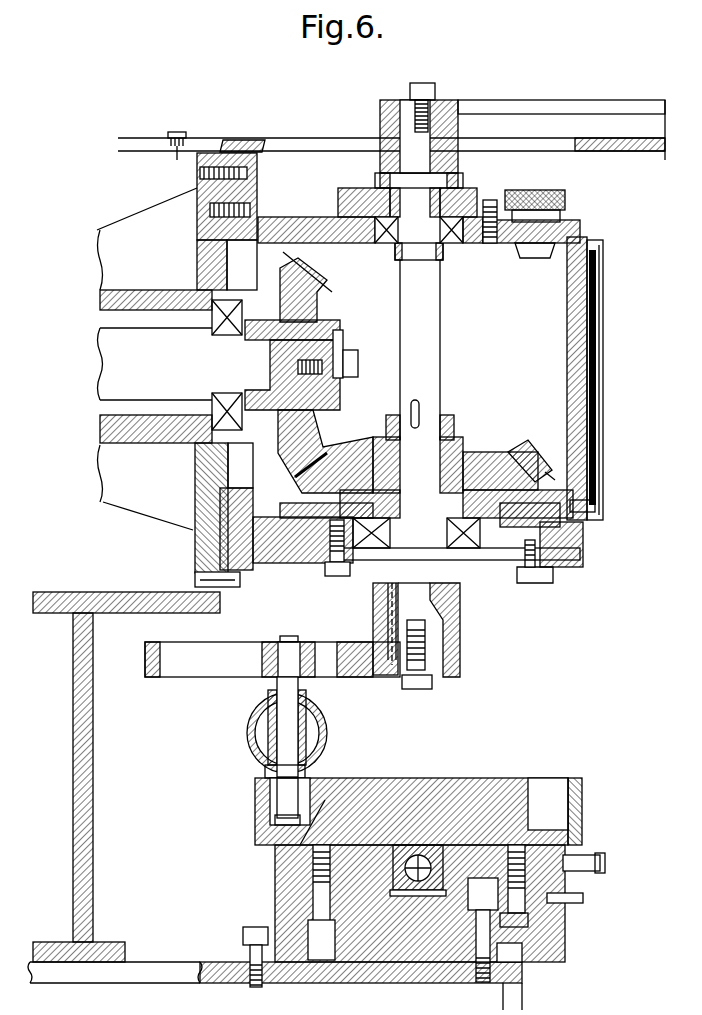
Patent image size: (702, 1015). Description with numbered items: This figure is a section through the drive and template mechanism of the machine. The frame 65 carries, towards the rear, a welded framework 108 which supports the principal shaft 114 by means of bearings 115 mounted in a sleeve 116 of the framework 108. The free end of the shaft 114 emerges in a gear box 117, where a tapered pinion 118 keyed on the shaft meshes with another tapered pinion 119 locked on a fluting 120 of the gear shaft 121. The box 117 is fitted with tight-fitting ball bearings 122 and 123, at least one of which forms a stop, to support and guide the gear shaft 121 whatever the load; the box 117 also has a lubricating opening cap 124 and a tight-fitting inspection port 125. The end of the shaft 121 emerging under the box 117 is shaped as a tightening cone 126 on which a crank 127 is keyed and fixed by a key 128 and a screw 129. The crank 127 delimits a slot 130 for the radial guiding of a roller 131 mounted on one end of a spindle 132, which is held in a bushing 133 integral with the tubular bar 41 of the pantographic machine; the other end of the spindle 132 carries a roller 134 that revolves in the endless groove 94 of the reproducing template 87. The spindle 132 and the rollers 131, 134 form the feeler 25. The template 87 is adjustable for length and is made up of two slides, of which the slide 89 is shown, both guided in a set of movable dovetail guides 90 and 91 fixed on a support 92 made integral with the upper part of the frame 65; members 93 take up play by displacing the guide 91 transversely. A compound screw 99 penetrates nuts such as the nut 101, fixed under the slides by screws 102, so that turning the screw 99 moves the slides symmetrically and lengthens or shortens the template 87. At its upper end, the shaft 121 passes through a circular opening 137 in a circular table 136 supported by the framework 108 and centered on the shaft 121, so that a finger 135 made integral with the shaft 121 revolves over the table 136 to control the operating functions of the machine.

The feeler 25 is at (252, 775).
The tubular bar 41 is at (322, 712).
The frame 65 is at (512, 972).
The reproducing template 87 is at (583, 800).
The slide 89 is at (475, 810).
The movable guide 90 is at (305, 867).
The movable guide 91 is at (527, 926).
The support 92 is at (390, 966).
The members for taking up play 93 is at (588, 872).
The endless groove 94 is at (325, 800).
The compound screw 99 is at (410, 856).
The nut 101 is at (430, 842).
The screw 102 is at (505, 830).
The welded framework 108 is at (215, 535).
The principal shaft 114 is at (110, 380).
The bearings 115 is at (190, 294).
The sleeve 116 is at (110, 442).
The gear box 117 is at (517, 321).
The tapered pinion 118 is at (305, 428).
The tapered pinion 119 is at (478, 455).
The fluting 120 is at (396, 474).
The gear shaft 121 is at (398, 307).
The ball bearing 122 is at (446, 238).
The ball bearing 123 is at (330, 555).
The lubricating opening cap 124 is at (555, 214).
The inspection port 125 is at (603, 260).
The tightening cone 126 is at (458, 603).
The crank 127 is at (350, 642).
The key 128 is at (403, 575).
The screw 129 is at (418, 686).
The slot 130 is at (190, 676).
The roller 131 is at (265, 652).
The spindle 132 is at (275, 727).
The bushing 133 is at (262, 712).
The roller 134 is at (265, 800).
The finger 135 is at (555, 112).
The circular table 136 is at (150, 124).
The circular opening 137 is at (262, 148).